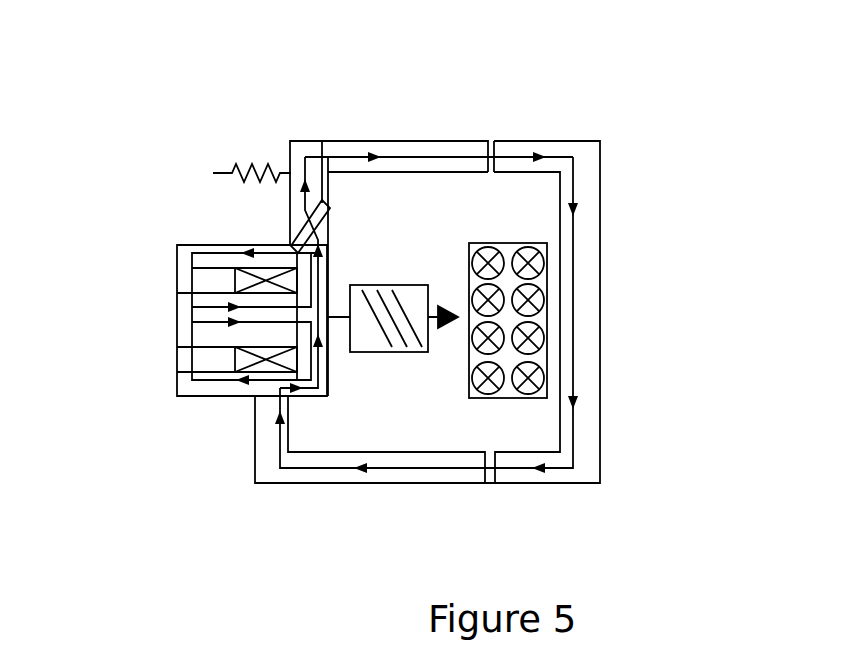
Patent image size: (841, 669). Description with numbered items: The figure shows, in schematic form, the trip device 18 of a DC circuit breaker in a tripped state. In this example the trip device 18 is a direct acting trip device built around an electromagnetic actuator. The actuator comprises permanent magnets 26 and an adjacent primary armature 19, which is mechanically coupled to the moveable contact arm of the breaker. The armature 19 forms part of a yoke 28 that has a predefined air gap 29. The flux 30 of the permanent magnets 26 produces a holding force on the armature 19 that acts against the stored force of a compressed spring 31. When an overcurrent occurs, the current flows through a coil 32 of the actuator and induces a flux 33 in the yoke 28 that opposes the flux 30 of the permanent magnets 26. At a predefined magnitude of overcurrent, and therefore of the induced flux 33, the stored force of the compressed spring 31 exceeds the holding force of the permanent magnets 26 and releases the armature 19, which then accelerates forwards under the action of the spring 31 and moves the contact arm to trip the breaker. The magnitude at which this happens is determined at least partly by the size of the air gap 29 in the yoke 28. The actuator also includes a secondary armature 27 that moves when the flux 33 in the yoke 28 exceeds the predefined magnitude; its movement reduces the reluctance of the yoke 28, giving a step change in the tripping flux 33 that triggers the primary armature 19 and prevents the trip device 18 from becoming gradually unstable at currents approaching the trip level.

The trip device 18 is at (592, 113).
The primary armature 19 is at (308, 408).
The permanent magnets 26 is at (243, 280).
The secondary armature 27 is at (268, 150).
The yoke 28 is at (587, 427).
The air gap 29 is at (492, 148).
The flux of the permanent magnets 30 is at (192, 263).
The compressed spring 31 is at (373, 284).
The coil 32 is at (482, 398).
The induced flux 33 is at (415, 150).